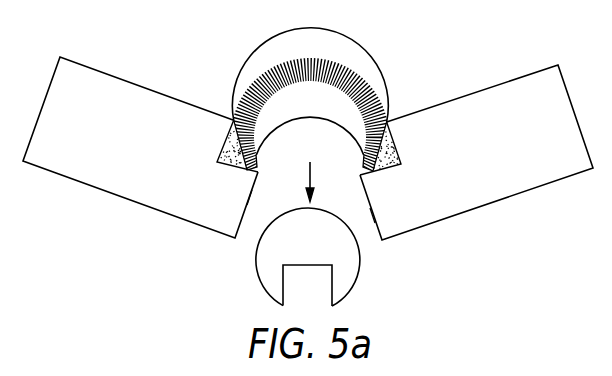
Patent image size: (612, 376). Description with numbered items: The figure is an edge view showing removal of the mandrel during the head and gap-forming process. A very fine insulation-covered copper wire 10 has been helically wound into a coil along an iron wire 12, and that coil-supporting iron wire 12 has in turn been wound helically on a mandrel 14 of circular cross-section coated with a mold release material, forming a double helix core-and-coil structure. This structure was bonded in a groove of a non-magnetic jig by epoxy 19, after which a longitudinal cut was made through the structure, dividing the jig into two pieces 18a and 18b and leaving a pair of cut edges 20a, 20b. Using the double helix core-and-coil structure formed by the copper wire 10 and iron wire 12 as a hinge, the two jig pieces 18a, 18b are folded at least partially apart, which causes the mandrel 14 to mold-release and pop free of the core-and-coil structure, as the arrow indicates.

The insulation-covered copper wire 10 is at (347, 64).
The iron wire 12 is at (293, 60).
The mandrel 14 is at (315, 248).
The jig piece 18a is at (110, 132).
The jig piece 18b is at (500, 144).
The epoxy 19 is at (222, 164).
The cut edge 20a is at (250, 185).
The cut edge 20b is at (371, 208).